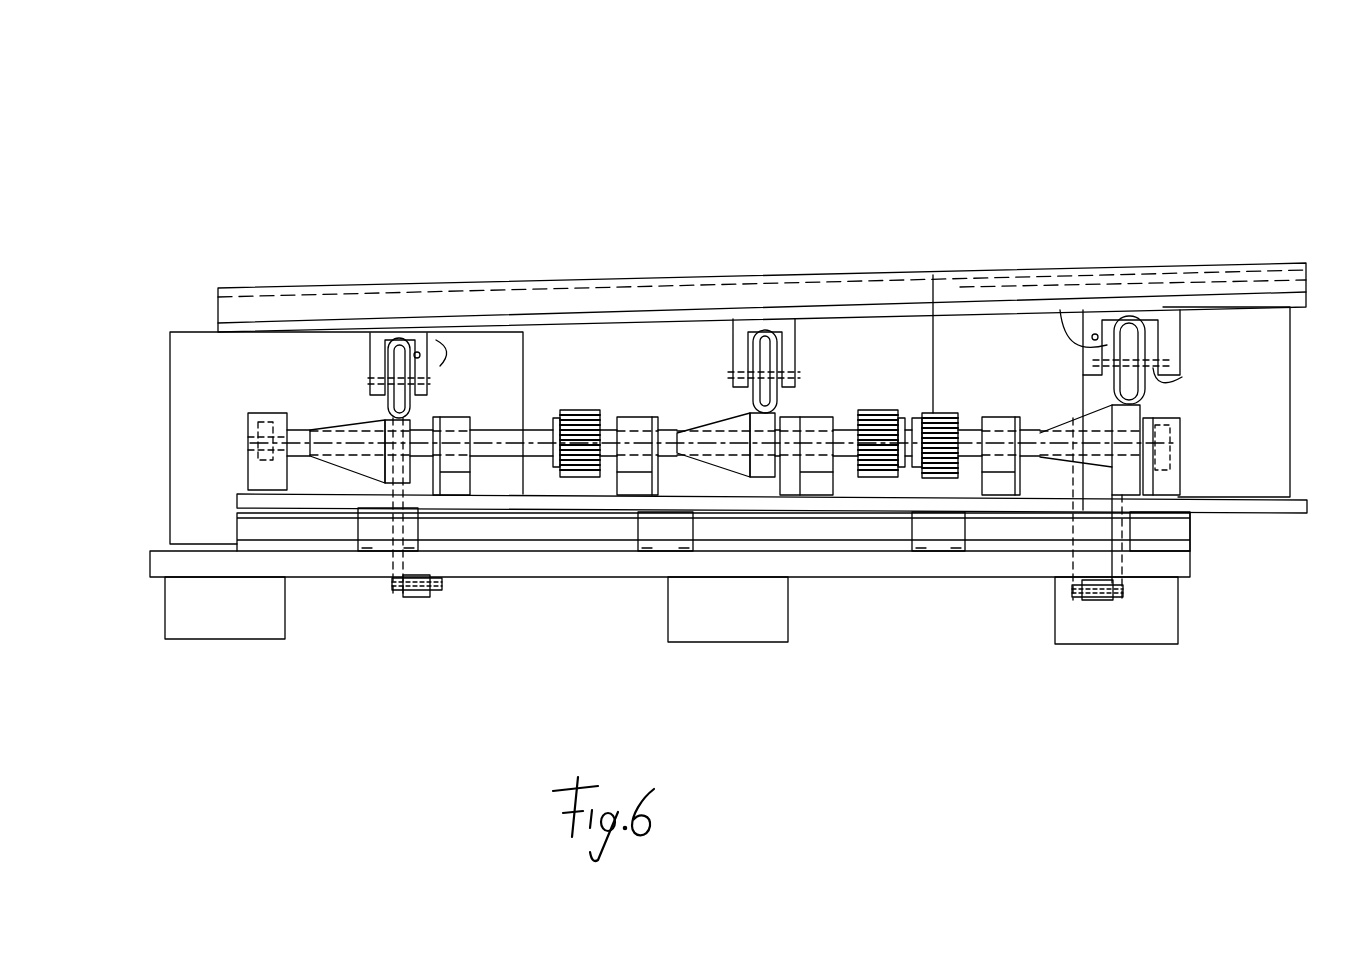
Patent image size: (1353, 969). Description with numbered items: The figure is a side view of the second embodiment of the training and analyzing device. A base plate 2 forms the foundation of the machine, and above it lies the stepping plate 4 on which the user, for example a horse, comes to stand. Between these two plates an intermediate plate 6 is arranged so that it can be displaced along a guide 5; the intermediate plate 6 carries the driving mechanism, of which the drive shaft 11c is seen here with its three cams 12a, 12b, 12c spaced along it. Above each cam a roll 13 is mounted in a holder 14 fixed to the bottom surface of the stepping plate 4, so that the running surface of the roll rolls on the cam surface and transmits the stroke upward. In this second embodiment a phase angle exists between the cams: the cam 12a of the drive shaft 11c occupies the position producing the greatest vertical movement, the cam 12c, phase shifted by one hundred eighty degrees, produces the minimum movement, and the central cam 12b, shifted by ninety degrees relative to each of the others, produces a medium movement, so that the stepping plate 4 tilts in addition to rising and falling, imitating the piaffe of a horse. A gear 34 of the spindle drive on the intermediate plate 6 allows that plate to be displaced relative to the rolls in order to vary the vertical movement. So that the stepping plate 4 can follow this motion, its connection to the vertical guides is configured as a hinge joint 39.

The base plate 2 is at (530, 572).
The stepping plate 4 is at (602, 300).
The guide 5 is at (588, 527).
The intermediate plate 6 is at (465, 503).
The drive shaft 11c is at (515, 430).
The cam 12a is at (1075, 418).
The cam 12b is at (751, 452).
The cam 12c is at (372, 467).
The roll 13 is at (373, 384).
The holder 14 is at (370, 337).
The gear 34 is at (766, 366).
The hinge joint 39 is at (436, 340).